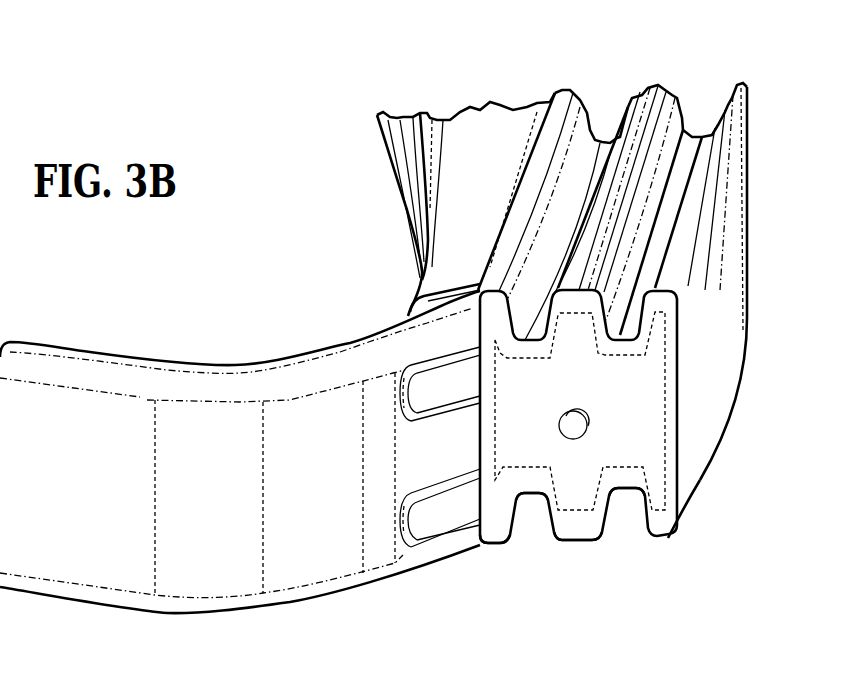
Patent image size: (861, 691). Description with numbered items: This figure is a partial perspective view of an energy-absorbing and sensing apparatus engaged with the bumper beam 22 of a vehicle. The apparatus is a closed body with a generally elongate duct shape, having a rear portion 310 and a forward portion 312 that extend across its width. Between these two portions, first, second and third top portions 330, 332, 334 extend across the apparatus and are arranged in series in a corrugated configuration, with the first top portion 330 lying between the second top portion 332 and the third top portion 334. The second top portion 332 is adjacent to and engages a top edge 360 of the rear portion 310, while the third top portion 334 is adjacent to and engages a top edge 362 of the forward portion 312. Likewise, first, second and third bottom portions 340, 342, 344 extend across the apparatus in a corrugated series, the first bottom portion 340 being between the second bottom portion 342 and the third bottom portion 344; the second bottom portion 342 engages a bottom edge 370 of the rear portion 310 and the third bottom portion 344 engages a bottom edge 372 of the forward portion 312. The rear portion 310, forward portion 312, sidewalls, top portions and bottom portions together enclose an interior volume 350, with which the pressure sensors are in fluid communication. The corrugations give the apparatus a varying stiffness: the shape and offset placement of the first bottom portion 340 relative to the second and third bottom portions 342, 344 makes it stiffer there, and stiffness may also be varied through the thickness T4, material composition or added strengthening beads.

The bumper beam 22 is at (90, 340).
The rear portion 310 is at (483, 437).
The forward portion 312 is at (720, 233).
The first top portion 330 is at (645, 102).
The second top portion 332 is at (612, 143).
The third top portion 334 is at (703, 150).
The first bottom portion 340 is at (573, 542).
The second bottom portion 342 is at (522, 482).
The third bottom portion 344 is at (627, 482).
The interior volume 350 is at (556, 389).
The top edge of the rear portion 360 is at (533, 197).
The top edge of the forward portion 362 is at (683, 268).
The bottom edge of the rear portion 370 is at (487, 537).
The bottom edge of the forward portion 372 is at (663, 532).
The thickness T4 is at (535, 437).